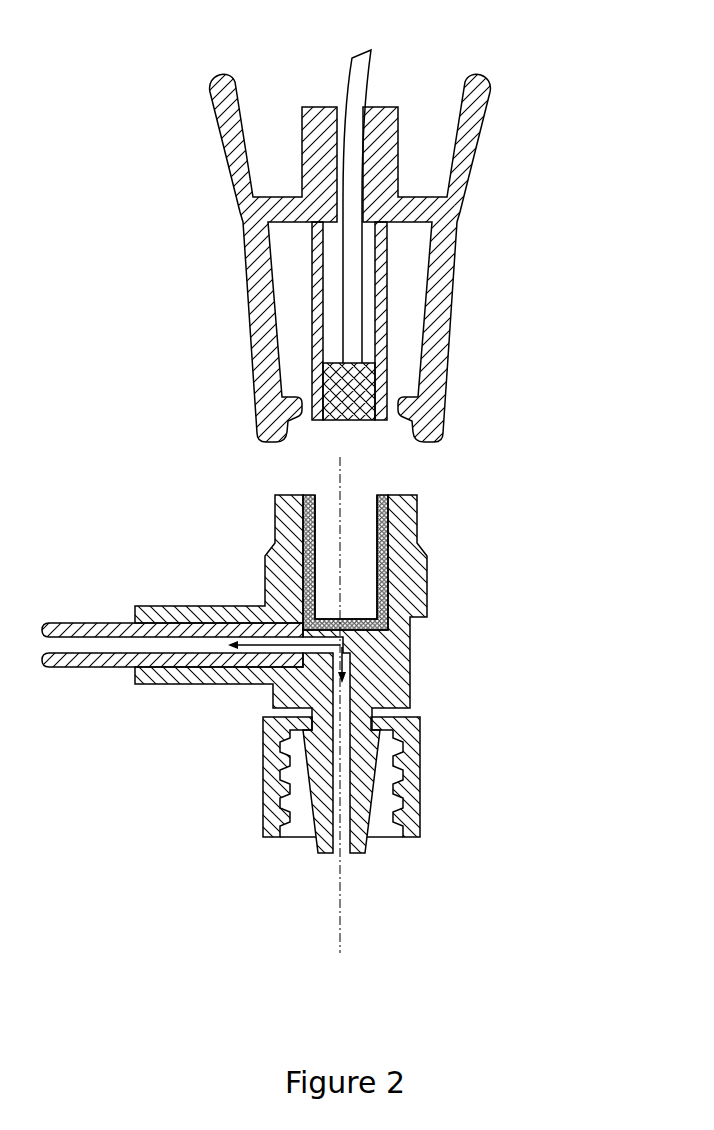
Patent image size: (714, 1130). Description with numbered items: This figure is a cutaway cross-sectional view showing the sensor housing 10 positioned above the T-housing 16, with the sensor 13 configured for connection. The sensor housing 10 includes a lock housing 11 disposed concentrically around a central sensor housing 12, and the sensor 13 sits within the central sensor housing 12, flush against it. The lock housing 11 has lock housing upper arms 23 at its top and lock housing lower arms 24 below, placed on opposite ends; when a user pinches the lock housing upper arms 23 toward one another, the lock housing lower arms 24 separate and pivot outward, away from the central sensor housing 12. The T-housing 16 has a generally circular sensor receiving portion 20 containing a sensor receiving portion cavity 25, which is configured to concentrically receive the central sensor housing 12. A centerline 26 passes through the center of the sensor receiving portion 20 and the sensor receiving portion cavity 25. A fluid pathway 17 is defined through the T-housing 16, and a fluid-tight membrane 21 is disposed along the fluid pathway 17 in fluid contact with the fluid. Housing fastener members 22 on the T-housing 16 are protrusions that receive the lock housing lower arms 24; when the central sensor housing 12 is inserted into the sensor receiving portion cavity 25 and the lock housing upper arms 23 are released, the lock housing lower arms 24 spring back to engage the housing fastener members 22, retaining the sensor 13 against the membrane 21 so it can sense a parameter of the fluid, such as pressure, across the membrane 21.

The sensor housing 10 is at (344, 227).
The lock housing 11 is at (355, 227).
The central sensor housing 12 is at (409, 291).
The sensor 13 is at (386, 379).
The T-housing 16 is at (196, 833).
The fluid pathway 17 is at (362, 665).
The sensor receiving portion 20 is at (309, 697).
The membrane 21 is at (427, 591).
The housing fastener members 22 is at (256, 574).
The lock housing upper arms 23 is at (199, 63).
The lock housing lower arms 24 is at (232, 406).
The sensor receiving portion cavity 25 is at (362, 595).
The centerline 26 is at (319, 473).